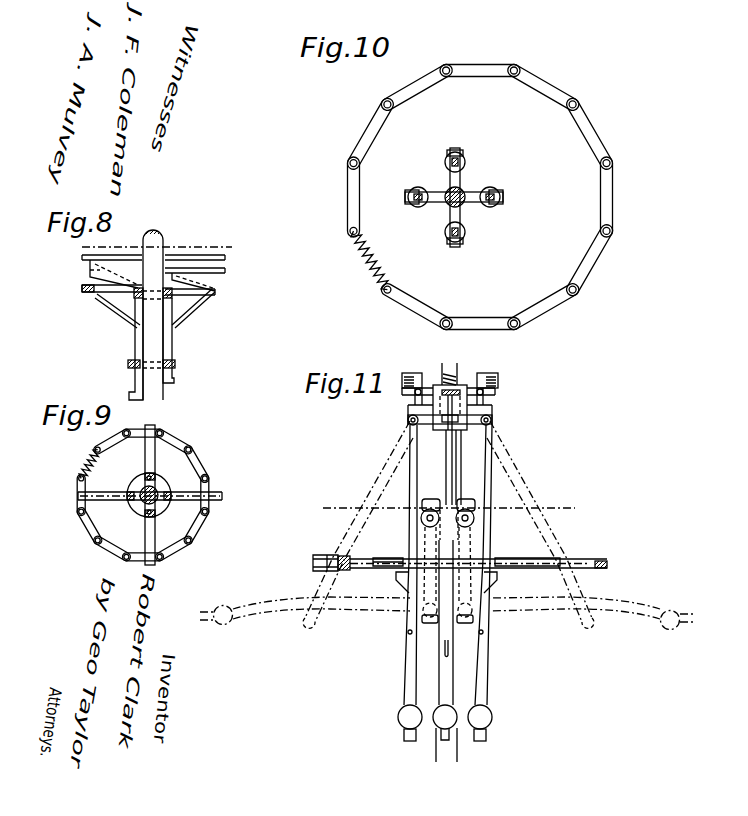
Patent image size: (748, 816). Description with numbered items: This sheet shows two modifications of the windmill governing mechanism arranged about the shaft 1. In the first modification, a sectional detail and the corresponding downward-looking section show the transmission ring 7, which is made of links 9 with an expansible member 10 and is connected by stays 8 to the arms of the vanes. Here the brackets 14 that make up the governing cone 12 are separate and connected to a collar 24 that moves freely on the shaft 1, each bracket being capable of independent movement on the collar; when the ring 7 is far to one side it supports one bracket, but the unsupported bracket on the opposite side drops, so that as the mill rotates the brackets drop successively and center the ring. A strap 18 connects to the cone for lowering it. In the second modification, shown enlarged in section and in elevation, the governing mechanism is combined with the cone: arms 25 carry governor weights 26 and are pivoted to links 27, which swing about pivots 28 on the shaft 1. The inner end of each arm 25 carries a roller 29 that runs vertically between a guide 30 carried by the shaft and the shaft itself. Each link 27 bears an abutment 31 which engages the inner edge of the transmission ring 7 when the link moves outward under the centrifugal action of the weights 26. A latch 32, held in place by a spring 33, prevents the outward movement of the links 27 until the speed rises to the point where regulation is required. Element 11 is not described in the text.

In FIG. 8, the shaft 1 is at (155, 392).
In FIG. 9, the shaft 1 is at (141, 510).
In FIG. 10, the shaft 1 is at (460, 193).
In FIG. 11, the shaft 1 is at (447, 756).
In FIG. 8, the transmission ring 7 is at (214, 297).
In FIG. 9, the transmission ring 7 is at (151, 487).
In FIG. 10, the transmission ring 7 is at (625, 187).
In FIG. 11, the transmission ring 7 is at (498, 564).
In FIG. 9, the stays 8 is at (78, 496).
In FIG. 8, the links 9 is at (157, 274).
In FIG. 9, the links 9 is at (143, 499).
In FIG. 10, the links 9 is at (543, 297).
In FIG. 11, the links 9 is at (460, 570).
In FIG. 9, the expansible member 10 is at (88, 462).
In FIG. 10, the expansible member 10 is at (369, 256).
In FIG. 11, the expansible member 10 is at (451, 509).
In FIG. 8, the brace 11 is at (185, 298).
In FIG. 11, the governing cone 12 is at (390, 450).
In FIG. 8, the brackets 14 is at (115, 312).
In FIG. 9, the brackets 14 is at (140, 460).
In FIG. 8, the strap 18 is at (143, 248).
In FIG. 9, the strap 18 is at (137, 488).
In FIG. 8, the collar 24 is at (134, 312).
In FIG. 9, the collar 24 is at (163, 486).
In FIG. 10, the arms 25 is at (444, 163).
In FIG. 11, the arms 25 is at (503, 685).
In FIG. 10, the governor weights 26 is at (405, 202).
In FIG. 11, the governor weights 26 is at (404, 711).
In FIG. 11, the links 27 is at (448, 449).
In FIG. 11, the pivots 28 is at (408, 421).
In FIG. 10, the roller 29 is at (448, 173).
In FIG. 11, the roller 29 is at (465, 500).
In FIG. 10, the guide 30 is at (462, 172).
In FIG. 11, the guide 30 is at (423, 498).
In FIG. 11, the abutment 31 is at (396, 577).
In FIG. 11, the latch 32 is at (412, 400).
In FIG. 11, the spring 33 is at (411, 374).